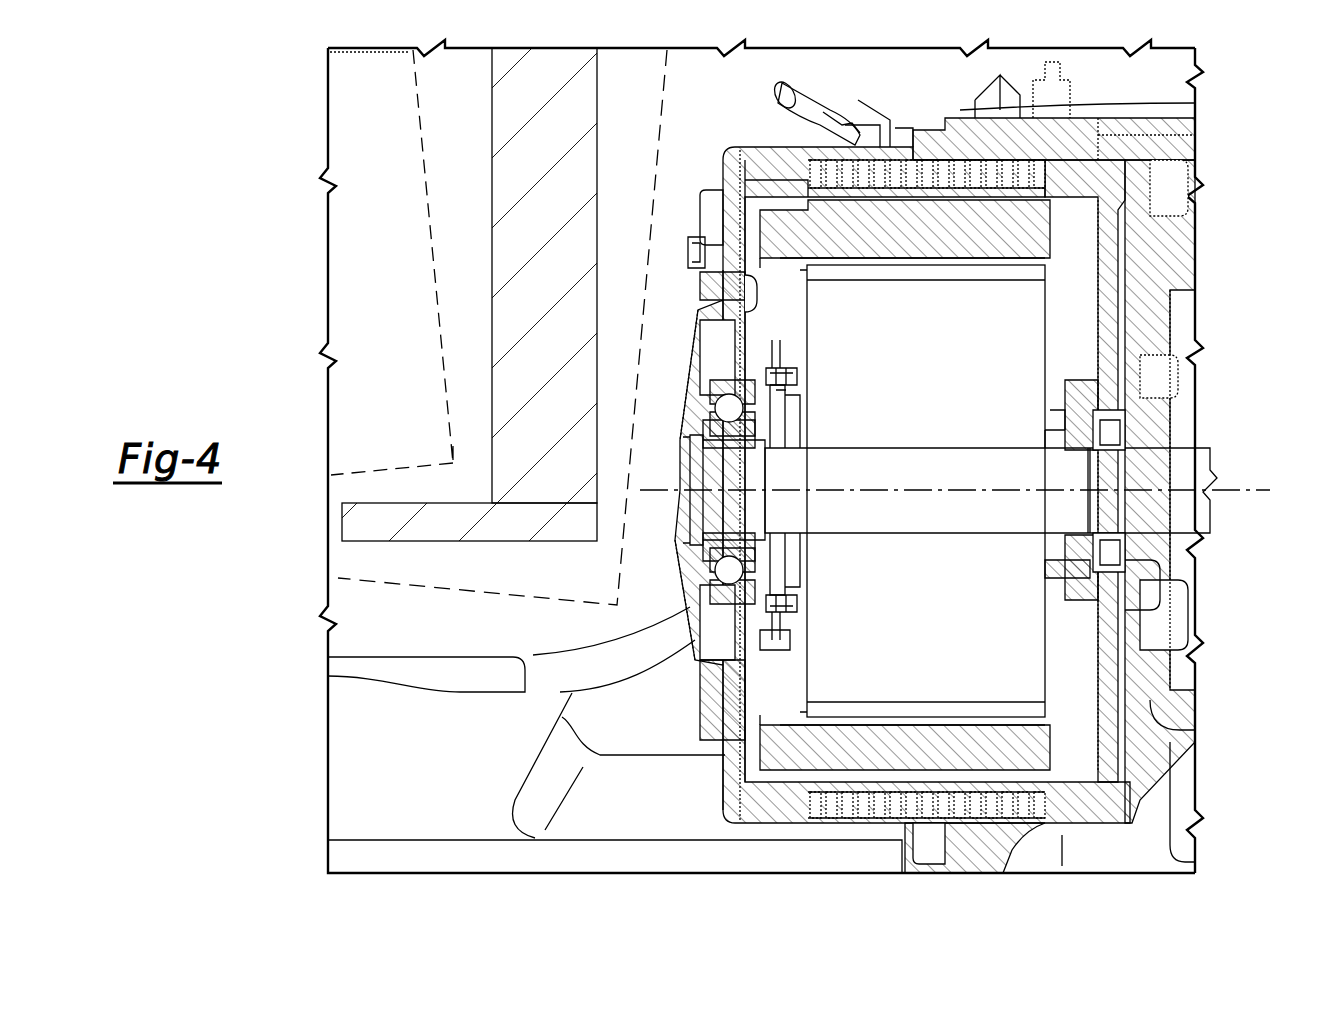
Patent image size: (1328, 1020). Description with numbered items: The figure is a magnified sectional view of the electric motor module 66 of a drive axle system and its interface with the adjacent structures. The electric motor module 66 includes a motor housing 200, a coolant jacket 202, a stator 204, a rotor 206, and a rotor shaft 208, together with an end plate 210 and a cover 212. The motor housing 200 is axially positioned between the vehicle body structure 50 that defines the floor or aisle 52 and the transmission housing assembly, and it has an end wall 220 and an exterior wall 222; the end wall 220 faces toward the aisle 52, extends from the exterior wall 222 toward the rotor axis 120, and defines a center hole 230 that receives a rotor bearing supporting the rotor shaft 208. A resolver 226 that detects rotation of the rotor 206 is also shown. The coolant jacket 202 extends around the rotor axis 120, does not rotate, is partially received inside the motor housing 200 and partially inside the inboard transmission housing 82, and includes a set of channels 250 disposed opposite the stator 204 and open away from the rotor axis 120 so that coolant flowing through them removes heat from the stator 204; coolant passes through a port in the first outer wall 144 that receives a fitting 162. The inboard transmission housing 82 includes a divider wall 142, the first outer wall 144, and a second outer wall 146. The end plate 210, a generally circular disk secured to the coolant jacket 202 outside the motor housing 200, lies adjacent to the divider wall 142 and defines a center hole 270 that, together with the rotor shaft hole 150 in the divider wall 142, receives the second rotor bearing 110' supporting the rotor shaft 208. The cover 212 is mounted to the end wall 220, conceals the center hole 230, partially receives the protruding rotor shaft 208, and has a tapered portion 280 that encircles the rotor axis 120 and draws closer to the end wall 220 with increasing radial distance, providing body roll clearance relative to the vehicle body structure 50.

The vehicle body structure 50 is at (569, 267).
The floor or aisle 52 is at (412, 267).
The electric motor module 66 is at (755, 838).
The inboard transmission housing 82 is at (1168, 122).
The second rotor bearing 110' is at (1215, 585).
The rotor axis 120 is at (1232, 488).
The divider wall 142 is at (1145, 250).
The first outer wall 144 is at (1082, 122).
The second outer wall 146 is at (1197, 133).
The rotor shaft hole 150 is at (1140, 425).
The fitting 162 is at (790, 98).
The motor housing 200 is at (722, 152).
The coolant jacket 202 is at (768, 168).
The stator 204 is at (948, 233).
The rotor 206 is at (948, 363).
The rotor shaft 208 is at (948, 498).
The end plate 210 is at (1108, 232).
The cover 212 is at (678, 445).
The end wall 220 is at (722, 188).
The exterior wall 222 is at (893, 135).
The resolver 226 is at (795, 352).
The center hole 230 is at (792, 620).
The channels 250 is at (1010, 820).
The center hole 270 is at (1068, 588).
The tapered portion 280 is at (690, 330).